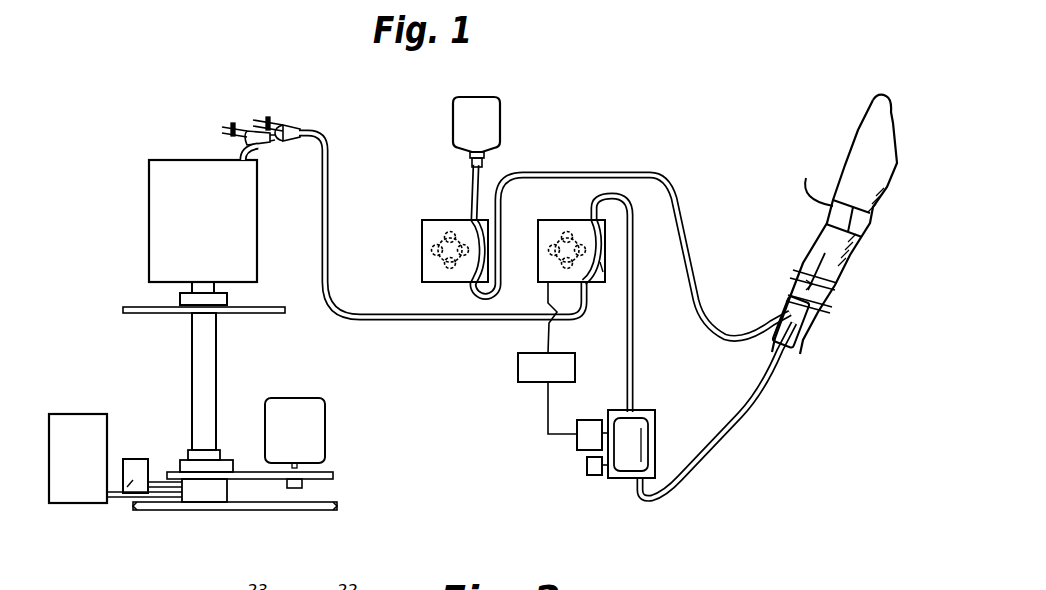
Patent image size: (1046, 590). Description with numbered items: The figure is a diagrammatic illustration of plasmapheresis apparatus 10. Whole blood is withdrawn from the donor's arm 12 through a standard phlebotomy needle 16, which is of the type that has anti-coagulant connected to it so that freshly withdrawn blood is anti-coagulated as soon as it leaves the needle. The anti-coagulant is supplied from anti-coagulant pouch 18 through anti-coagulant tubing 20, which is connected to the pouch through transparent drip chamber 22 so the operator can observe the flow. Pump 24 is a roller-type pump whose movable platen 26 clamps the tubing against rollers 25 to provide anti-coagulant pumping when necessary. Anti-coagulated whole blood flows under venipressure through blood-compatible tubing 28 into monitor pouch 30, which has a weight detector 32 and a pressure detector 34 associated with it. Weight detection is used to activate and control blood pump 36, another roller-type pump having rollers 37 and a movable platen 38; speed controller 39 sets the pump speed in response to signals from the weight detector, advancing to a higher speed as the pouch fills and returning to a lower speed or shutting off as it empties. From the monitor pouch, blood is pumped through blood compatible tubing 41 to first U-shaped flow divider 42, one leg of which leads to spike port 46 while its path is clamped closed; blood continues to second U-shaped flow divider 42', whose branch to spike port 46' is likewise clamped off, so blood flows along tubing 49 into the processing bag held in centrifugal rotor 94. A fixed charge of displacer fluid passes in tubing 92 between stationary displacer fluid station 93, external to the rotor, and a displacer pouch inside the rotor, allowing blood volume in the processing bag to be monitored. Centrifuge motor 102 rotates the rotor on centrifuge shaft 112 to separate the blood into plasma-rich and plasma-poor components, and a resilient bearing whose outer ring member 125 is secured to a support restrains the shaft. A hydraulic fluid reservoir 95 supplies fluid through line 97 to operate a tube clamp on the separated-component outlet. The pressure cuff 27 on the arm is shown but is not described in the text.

The plasmapheresis apparatus 10 is at (412, 337).
The donor's arm 12 is at (855, 163).
The phlebotomy needle 16 is at (802, 288).
The anti-coagulant pouch 18 is at (483, 123).
The anti-coagulant tubing 20 is at (667, 173).
The transparent drip chamber 22 is at (470, 157).
The anti-coagulant pump 24 is at (437, 220).
The rollers 25 is at (422, 244).
The movable platen 26 is at (482, 213).
The pressure cuff 27 is at (863, 227).
The blood-compatible tubing 28 is at (730, 428).
The monitor pouch 30 is at (673, 415).
The weight detector 32 is at (575, 442).
The pressure detector 34 is at (595, 476).
The blood pump 36 is at (537, 250).
The rollers 37 is at (536, 259).
The movable platen 38 is at (605, 268).
The speed controller 39 is at (525, 380).
The blood compatible tubing 41 is at (393, 322).
The first U-shaped flow divider 42 is at (298, 121).
The second U-shaped flow divider 42' is at (259, 148).
The spike port 46 is at (289, 108).
The spike port 46' is at (220, 114).
The tubing 49 is at (236, 147).
The tubing 92 is at (127, 487).
The displacer fluid station 93 is at (92, 420).
The centrifugal rotor 94 is at (157, 193).
The hydraulic fluid reservoir 95 is at (126, 493).
The line 97 is at (158, 480).
The centrifuge motor 102 is at (303, 437).
The centrifuge shaft 112 is at (217, 359).
The outer ring member 125 is at (225, 300).